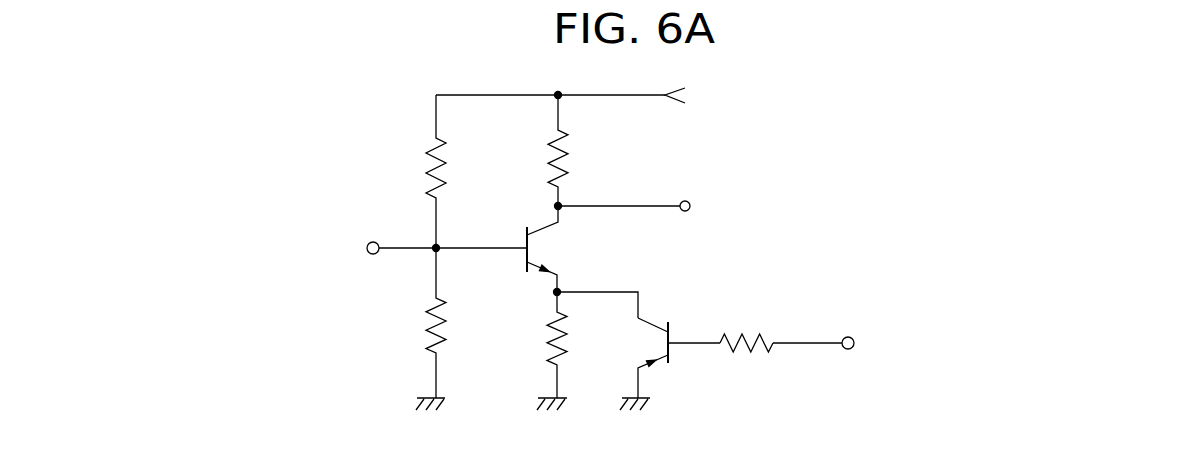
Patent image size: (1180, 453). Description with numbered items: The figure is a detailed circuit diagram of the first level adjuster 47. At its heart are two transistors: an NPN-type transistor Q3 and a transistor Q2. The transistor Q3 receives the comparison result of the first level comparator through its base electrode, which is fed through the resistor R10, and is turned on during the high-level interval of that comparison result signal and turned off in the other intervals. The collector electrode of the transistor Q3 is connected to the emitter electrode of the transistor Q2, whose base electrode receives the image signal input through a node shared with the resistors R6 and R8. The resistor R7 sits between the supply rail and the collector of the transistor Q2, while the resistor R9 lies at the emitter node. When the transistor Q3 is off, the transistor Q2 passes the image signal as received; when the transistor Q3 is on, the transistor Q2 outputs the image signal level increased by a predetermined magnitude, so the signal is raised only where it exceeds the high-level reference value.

The first level adjuster 47 is at (822, 113).
The resistor R6 is at (414, 171).
The resistor R7 is at (539, 150).
The resistor R8 is at (412, 323).
The resistor R9 is at (535, 345).
The resistor R10 is at (746, 327).
The transistor Q2 is at (557, 249).
The NPN-type transistor Q3 is at (635, 358).